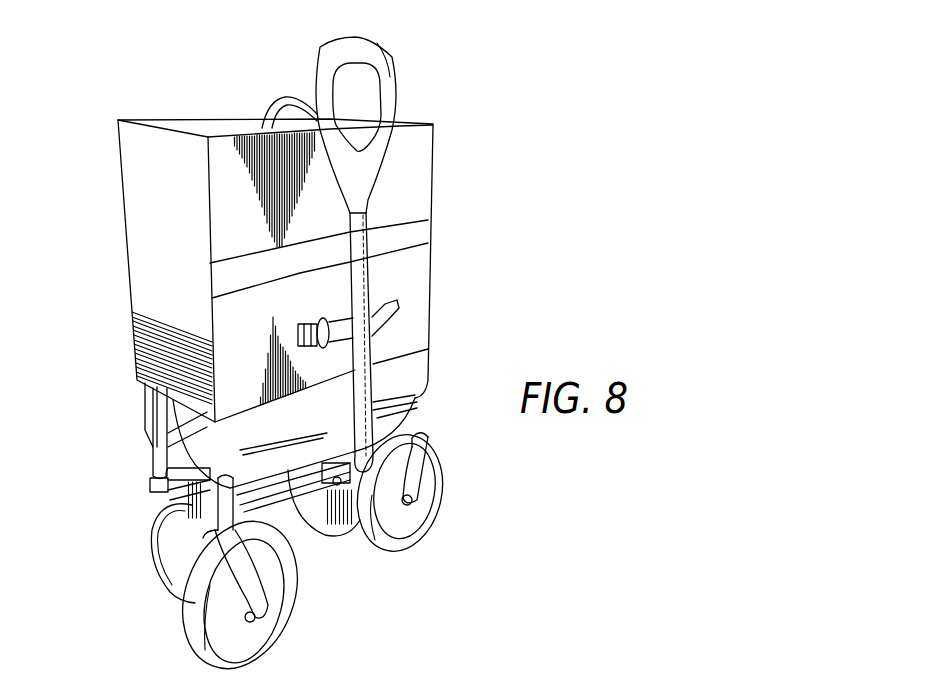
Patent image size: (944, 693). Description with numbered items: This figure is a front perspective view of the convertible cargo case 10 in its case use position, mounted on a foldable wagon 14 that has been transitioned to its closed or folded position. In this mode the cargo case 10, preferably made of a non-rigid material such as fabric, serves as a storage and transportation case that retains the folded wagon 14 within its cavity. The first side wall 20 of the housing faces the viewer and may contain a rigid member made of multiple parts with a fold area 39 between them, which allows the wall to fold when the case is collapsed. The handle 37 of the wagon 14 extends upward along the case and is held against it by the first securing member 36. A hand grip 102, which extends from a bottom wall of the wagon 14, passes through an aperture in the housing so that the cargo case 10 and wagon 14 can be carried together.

The convertible cargo case 10 is at (422, 163).
The wagon 14 is at (155, 475).
The first side wall 20 is at (230, 172).
The first securing member 36 is at (380, 315).
The handle 37 is at (388, 78).
The fold area 39 is at (233, 273).
The hand grip 102 is at (293, 100).